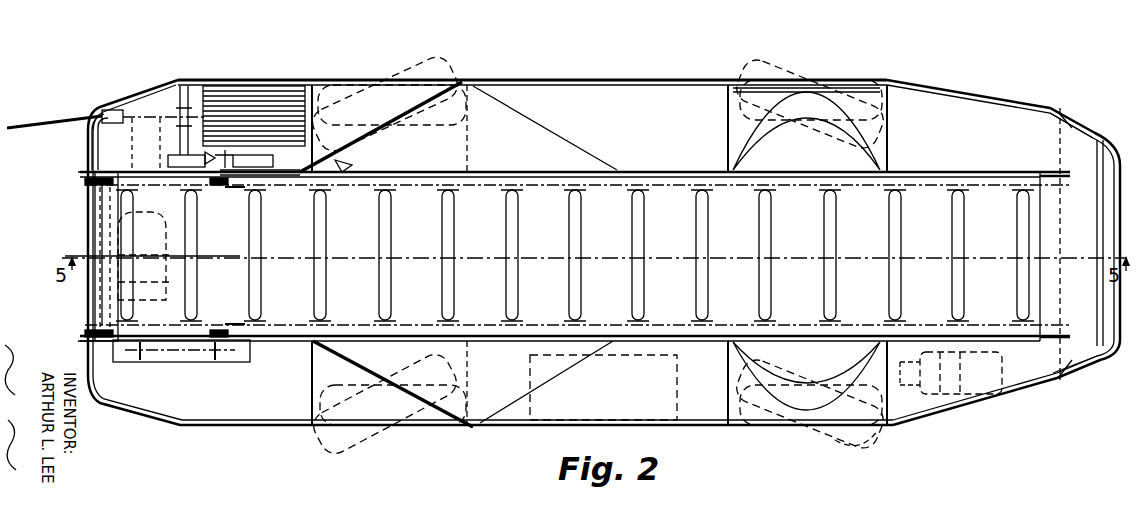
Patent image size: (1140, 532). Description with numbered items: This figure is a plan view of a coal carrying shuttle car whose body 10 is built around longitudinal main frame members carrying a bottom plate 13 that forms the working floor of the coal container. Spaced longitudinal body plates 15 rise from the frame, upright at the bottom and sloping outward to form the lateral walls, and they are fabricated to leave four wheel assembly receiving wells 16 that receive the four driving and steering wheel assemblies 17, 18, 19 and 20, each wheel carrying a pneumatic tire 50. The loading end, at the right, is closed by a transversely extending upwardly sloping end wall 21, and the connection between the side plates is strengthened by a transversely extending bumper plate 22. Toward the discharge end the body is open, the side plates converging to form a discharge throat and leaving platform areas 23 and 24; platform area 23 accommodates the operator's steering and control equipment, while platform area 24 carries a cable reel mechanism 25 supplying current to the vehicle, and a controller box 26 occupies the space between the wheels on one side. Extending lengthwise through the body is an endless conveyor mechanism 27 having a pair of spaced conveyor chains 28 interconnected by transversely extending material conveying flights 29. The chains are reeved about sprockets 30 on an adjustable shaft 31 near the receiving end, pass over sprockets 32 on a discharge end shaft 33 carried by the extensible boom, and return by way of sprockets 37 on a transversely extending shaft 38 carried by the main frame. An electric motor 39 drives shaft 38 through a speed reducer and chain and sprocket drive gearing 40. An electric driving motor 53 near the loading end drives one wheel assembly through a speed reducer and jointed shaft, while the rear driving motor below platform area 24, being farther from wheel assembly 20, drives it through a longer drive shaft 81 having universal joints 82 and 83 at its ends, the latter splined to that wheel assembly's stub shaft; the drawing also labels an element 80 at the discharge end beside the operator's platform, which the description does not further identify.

The body 10 is at (603, 76).
The bottom plate 13 is at (575, 256).
The body plates 15 is at (657, 105).
The wheel assembly receiving wells 16 is at (312, 84).
The wheel assembly 17 is at (838, 446).
The wheel assembly 18 is at (794, 72).
The wheel assembly 19 is at (372, 452).
The wheel assembly 20 is at (410, 68).
The end wall 21 is at (1085, 160).
The bumper plate 22 is at (1125, 350).
The platform area 23 is at (268, 390).
The platform area 24 is at (156, 96).
The cable reel mechanism 25 is at (252, 88).
The controller box 26 is at (692, 415).
The endless conveyor mechanism 27 is at (910, 212).
The conveyor chains 28 is at (491, 325).
The material conveying flights 29 is at (704, 243).
The sprockets 30 is at (1065, 320).
The adjustable shaft 31 is at (1056, 225).
The sprockets 32 is at (95, 182).
The discharge end shaft 33 is at (95, 230).
The sprockets 37 is at (240, 190).
The transversely extending shaft 38 is at (238, 256).
The electric motor 39 is at (112, 272).
The chain and sprocket drive gearing 40 is at (178, 362).
The pneumatic tire 50 is at (860, 442).
The electric driving motor 53 is at (958, 392).
The steering gear 80 is at (115, 145).
The drive shaft 81 is at (289, 160).
The universal joint 82 is at (214, 185).
The universal joint 83 is at (342, 170).